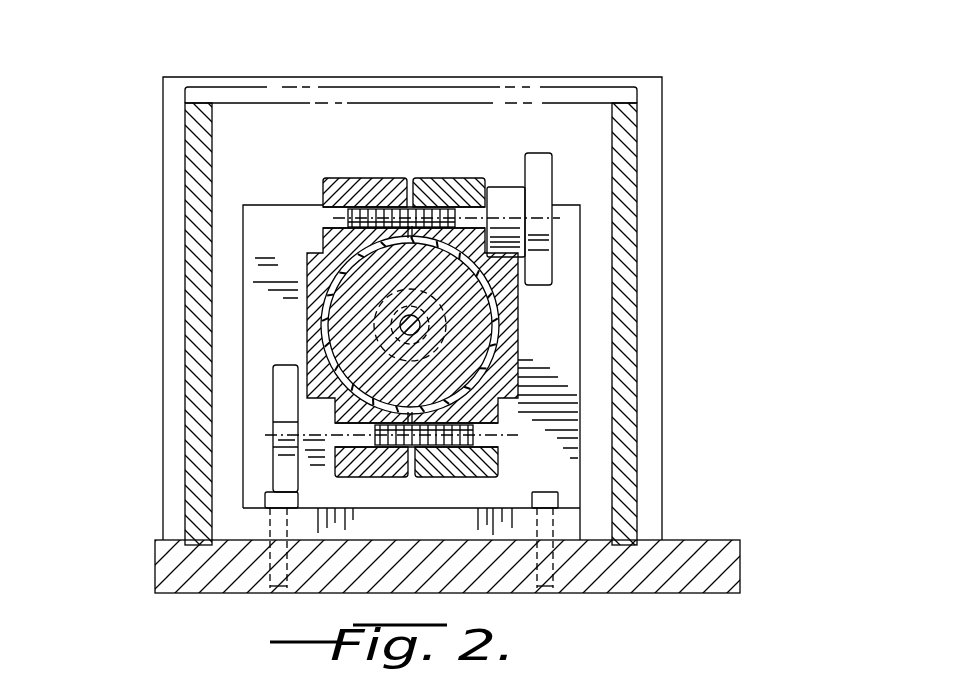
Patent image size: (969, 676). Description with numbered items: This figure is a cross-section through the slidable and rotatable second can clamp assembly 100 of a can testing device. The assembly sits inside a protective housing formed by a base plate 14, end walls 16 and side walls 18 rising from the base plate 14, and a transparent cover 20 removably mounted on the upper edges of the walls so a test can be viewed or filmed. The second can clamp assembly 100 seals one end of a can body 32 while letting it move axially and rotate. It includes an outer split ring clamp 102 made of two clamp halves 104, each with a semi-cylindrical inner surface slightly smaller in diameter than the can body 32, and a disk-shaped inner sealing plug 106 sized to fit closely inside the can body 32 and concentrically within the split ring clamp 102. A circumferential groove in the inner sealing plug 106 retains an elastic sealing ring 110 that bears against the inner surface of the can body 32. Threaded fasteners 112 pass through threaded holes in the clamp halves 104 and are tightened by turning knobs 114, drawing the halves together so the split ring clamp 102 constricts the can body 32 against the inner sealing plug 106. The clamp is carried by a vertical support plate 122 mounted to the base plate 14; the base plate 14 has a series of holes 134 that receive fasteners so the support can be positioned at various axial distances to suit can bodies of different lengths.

The base plate 14 is at (160, 570).
The end walls 16 is at (163, 178).
The side walls 18 is at (188, 257).
The transparent cover 20 is at (265, 77).
The can body 32 is at (323, 345).
The second can clamp assembly 100 is at (474, 128).
The outer split ring clamp 102 is at (318, 182).
The clamp halves 104 is at (348, 178).
The inner sealing plug 106 is at (365, 280).
The elastic sealing ring 110 is at (496, 322).
The threaded fasteners 112 is at (427, 215).
The knobs 114 is at (548, 193).
The vertical support plate 122 is at (567, 442).
The holes 134 is at (270, 528).